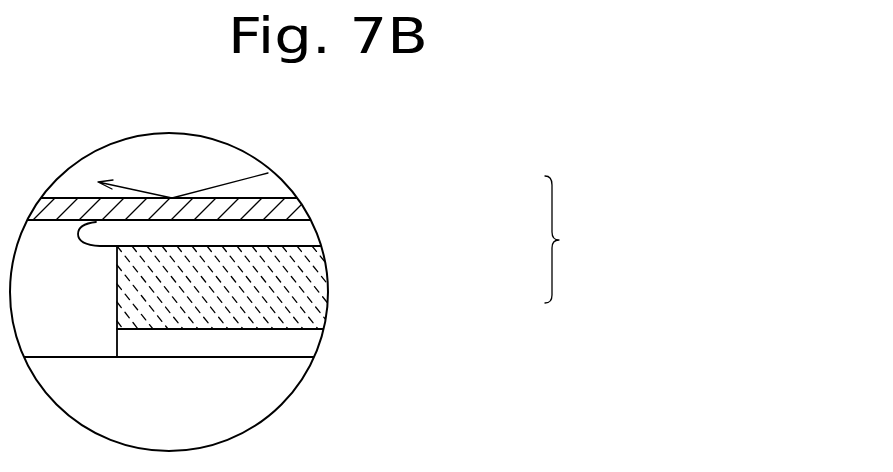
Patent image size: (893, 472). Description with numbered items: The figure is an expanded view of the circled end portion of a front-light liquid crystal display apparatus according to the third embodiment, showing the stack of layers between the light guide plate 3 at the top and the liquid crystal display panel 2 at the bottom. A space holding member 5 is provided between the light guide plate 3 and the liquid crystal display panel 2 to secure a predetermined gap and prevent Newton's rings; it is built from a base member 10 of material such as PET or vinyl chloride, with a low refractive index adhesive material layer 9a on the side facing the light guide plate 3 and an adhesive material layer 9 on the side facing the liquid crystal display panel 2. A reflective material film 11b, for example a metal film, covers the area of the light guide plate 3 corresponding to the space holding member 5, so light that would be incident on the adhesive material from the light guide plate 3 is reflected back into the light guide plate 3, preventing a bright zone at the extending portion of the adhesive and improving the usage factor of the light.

The light guide plate 3 is at (238, 158).
The reflective material film 11b is at (300, 205).
The adhesive material layer 9a is at (300, 232).
The space holding member 5 is at (627, 239).
The base member 10 is at (325, 273).
The adhesive material layer 9 is at (307, 342).
The liquid crystal display panel 2 is at (277, 395).